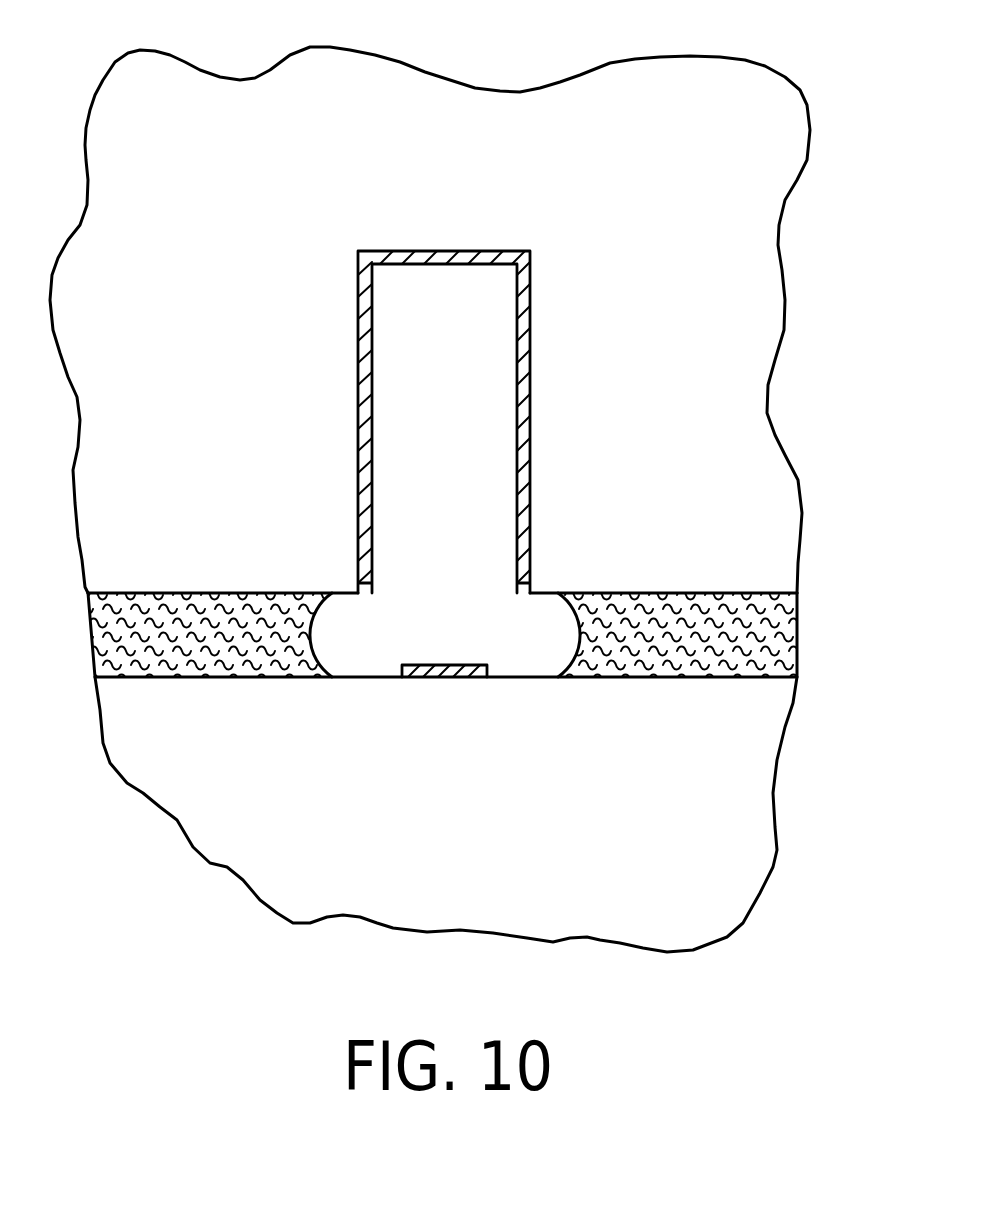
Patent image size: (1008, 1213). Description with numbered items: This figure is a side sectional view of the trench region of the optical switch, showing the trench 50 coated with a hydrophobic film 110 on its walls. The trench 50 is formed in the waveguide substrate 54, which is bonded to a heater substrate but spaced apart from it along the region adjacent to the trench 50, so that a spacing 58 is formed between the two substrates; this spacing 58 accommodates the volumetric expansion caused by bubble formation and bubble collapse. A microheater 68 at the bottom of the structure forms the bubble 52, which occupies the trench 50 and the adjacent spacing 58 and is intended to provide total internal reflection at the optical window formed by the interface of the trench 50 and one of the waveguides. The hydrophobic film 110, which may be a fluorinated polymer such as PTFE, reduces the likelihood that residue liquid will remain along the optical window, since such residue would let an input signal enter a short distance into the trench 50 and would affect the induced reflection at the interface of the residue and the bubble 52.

The trench 50 is at (463, 470).
The bubble 52 is at (763, 860).
The waveguide substrate 54 is at (778, 97).
The spacing 58 is at (783, 618).
The microheater 68 is at (463, 680).
The hydrophobic film 110 is at (523, 413).